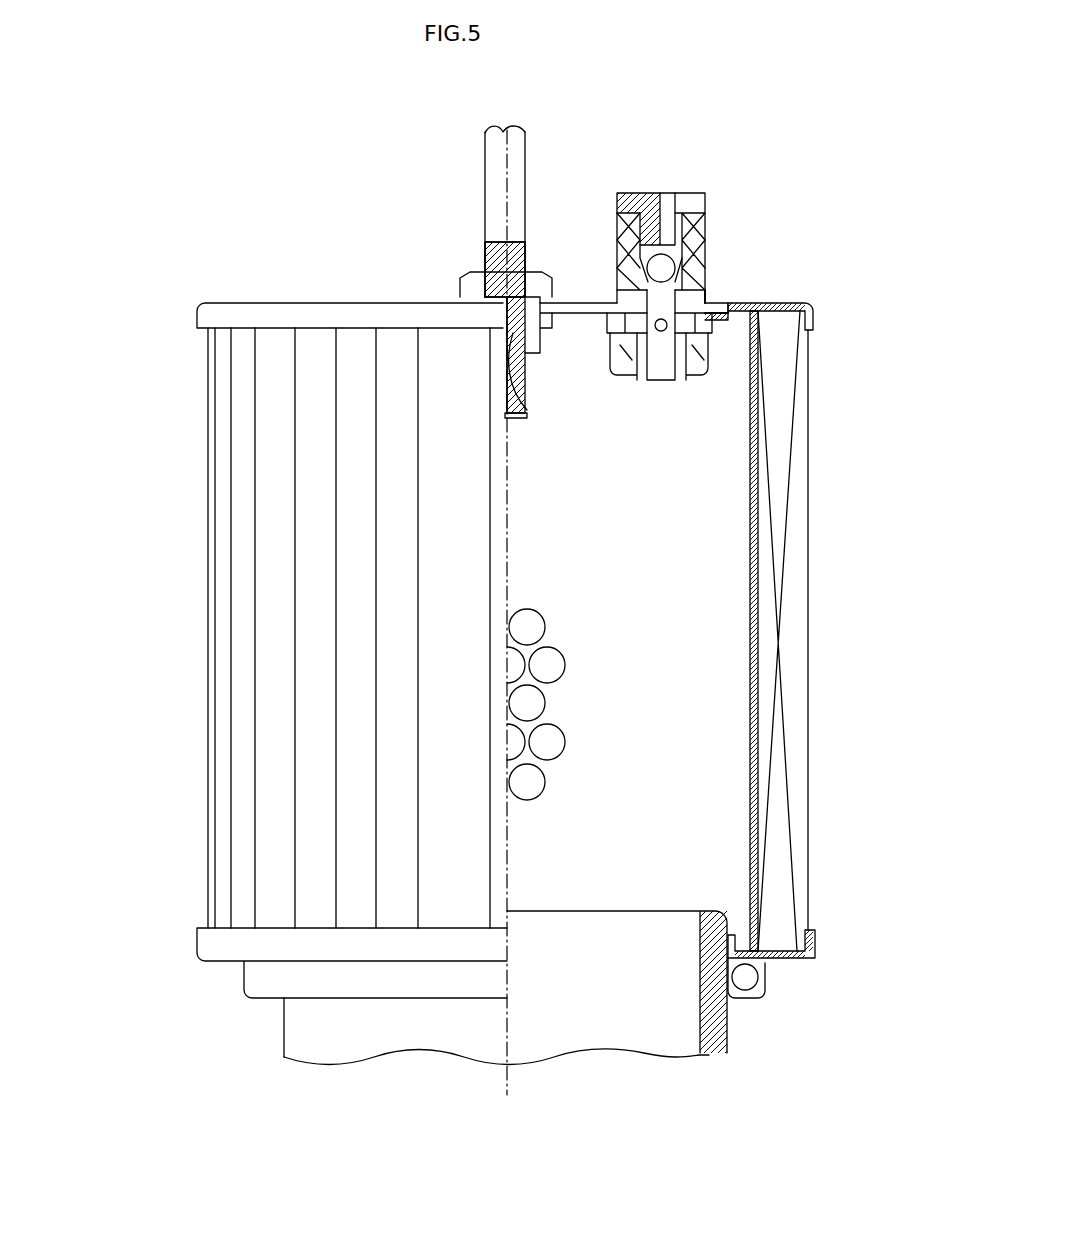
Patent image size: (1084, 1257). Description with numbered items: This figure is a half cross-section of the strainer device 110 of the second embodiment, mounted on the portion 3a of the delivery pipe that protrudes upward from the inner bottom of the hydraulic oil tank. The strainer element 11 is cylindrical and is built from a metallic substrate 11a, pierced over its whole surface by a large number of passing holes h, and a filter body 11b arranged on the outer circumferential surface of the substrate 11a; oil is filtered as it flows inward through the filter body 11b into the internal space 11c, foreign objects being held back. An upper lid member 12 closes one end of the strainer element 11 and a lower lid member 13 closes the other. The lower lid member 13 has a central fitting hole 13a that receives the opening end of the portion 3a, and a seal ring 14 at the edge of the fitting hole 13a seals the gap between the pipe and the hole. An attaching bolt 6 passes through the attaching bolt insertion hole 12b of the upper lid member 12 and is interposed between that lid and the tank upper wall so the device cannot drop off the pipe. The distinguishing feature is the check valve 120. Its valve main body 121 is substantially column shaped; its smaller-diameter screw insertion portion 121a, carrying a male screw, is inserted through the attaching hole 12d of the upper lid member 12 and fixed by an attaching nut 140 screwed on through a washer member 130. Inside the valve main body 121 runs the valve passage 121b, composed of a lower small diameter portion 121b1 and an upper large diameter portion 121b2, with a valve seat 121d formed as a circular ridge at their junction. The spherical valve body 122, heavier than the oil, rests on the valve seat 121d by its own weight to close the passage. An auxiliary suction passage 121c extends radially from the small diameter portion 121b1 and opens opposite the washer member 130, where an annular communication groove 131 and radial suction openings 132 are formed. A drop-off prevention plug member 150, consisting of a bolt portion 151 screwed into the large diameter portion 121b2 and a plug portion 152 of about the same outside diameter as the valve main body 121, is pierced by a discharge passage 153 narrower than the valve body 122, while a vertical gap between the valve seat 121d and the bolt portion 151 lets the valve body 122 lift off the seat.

The attaching bolt 6 is at (488, 128).
The drop-off prevention plug member 150 is at (393, 145).
The plug portion 152 is at (617, 200).
The bolt portion 151 is at (637, 237).
The valve passage 121b is at (370, 220).
The large diameter portion 121b2 is at (640, 264).
The small diameter portion 121b1 is at (652, 292).
The auxiliary suction passage 121c is at (630, 315).
The upper lid member 12 is at (197, 312).
The strainer device 110 is at (168, 392).
The strainer element 11 is at (240, 490).
The discharge passage 153 is at (674, 201).
The valve body 122 is at (686, 240).
The valve main body 121 is at (692, 263).
The valve seat 121d is at (688, 276).
The attaching hole 12d is at (710, 304).
The check valve 120 is at (808, 198).
The suction opening 132 is at (710, 323).
The communication groove 131 is at (710, 334).
The washer member 130 is at (614, 340).
The screw insertion portion 121a is at (674, 378).
The attaching bolt insertion hole 12b is at (527, 410).
The attaching nut 140 is at (637, 374).
The substrate 11a is at (754, 585).
The filter body 11b is at (776, 628).
The internal space 11c is at (722, 710).
The passing holes h is at (550, 738).
The fitting hole 13a is at (718, 935).
The lower lid member 13 is at (197, 942).
The seal ring 14 is at (745, 977).
The portion of the delivery pipe 3a is at (292, 1040).